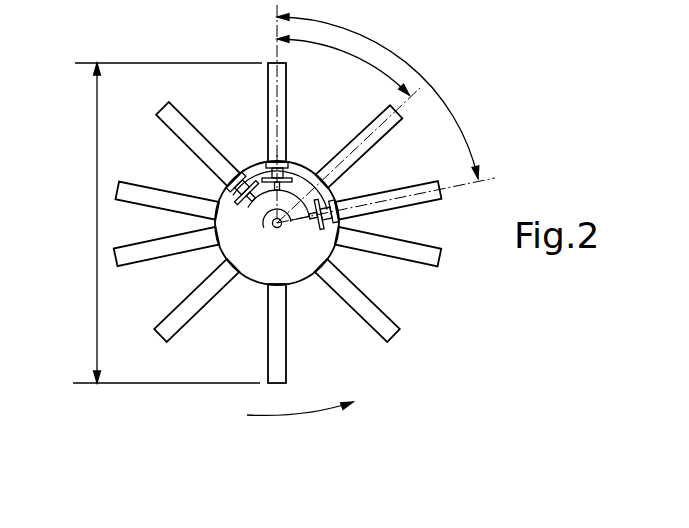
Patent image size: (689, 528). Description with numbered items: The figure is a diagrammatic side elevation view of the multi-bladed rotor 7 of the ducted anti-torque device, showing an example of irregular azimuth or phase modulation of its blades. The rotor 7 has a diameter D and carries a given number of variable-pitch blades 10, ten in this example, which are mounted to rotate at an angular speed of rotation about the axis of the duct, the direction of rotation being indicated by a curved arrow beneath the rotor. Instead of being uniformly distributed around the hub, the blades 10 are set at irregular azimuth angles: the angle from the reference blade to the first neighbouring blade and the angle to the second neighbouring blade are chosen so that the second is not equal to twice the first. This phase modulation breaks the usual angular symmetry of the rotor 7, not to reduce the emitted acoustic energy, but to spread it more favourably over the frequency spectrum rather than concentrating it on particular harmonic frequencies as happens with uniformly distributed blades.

The multi-bladed rotor 7 is at (214, 257).
The variable-pitch blades 10 is at (386, 323).
The rotor diameter D is at (162, 223).